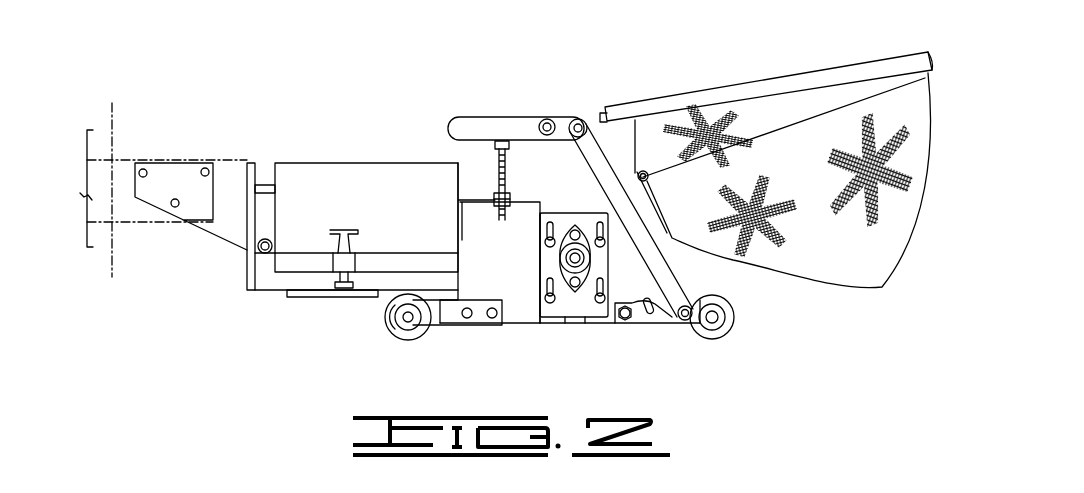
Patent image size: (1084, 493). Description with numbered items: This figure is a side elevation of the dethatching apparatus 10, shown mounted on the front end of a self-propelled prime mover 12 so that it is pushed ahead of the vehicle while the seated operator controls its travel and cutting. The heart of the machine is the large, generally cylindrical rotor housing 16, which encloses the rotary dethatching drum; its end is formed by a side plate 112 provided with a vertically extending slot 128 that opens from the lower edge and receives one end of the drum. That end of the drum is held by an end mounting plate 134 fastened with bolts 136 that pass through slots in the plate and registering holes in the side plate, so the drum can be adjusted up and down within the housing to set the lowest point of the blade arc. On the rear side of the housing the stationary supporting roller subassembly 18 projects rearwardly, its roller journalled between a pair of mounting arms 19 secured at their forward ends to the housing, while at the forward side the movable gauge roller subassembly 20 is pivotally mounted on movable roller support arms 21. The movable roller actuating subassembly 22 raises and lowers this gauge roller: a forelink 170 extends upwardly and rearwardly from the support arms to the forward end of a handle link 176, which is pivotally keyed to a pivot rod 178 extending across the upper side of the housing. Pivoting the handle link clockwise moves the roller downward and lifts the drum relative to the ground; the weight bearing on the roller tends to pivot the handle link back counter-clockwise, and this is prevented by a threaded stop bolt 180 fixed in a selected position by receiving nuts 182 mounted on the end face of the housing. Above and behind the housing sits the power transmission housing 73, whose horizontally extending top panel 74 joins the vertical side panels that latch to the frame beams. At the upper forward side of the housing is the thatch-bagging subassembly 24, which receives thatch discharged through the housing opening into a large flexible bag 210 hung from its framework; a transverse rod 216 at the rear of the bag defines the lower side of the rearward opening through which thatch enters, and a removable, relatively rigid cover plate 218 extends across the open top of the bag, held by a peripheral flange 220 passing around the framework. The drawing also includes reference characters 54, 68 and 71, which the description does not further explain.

The dethatching apparatus 10 is at (397, 108).
The prime mover 12 is at (112, 150).
The rotor housing 16 is at (520, 302).
The stationary supporting roller subassembly 18 is at (382, 332).
The mounting arms 19 is at (448, 318).
The movable gauge roller subassembly 20 is at (737, 337).
The movable roller support arms 21 is at (667, 314).
The movable roller actuating subassembly 22 is at (527, 105).
The thatch-bagging subassembly 24 is at (822, 50).
The mounting plate 54 is at (225, 223).
The conveyor rail 68 is at (150, 264).
The base plate 71 is at (315, 298).
The power transmission housing 73 is at (327, 140).
The top panel 74 is at (389, 198).
The side plate 112 is at (565, 178).
The slot 128 is at (567, 320).
The end mounting plate 134 is at (550, 262).
The bolts 136 is at (545, 242).
The forelink 170 is at (677, 290).
The handle link 176 is at (480, 125).
The pivot rod 178 is at (551, 119).
The threaded stop bolt 180 is at (530, 140).
The receiving nuts 182 is at (496, 201).
The flexible bag 210 is at (880, 267).
The transverse rod 216 is at (690, 170).
The cover plate 218 is at (888, 58).
The peripheral flange 220 is at (660, 103).